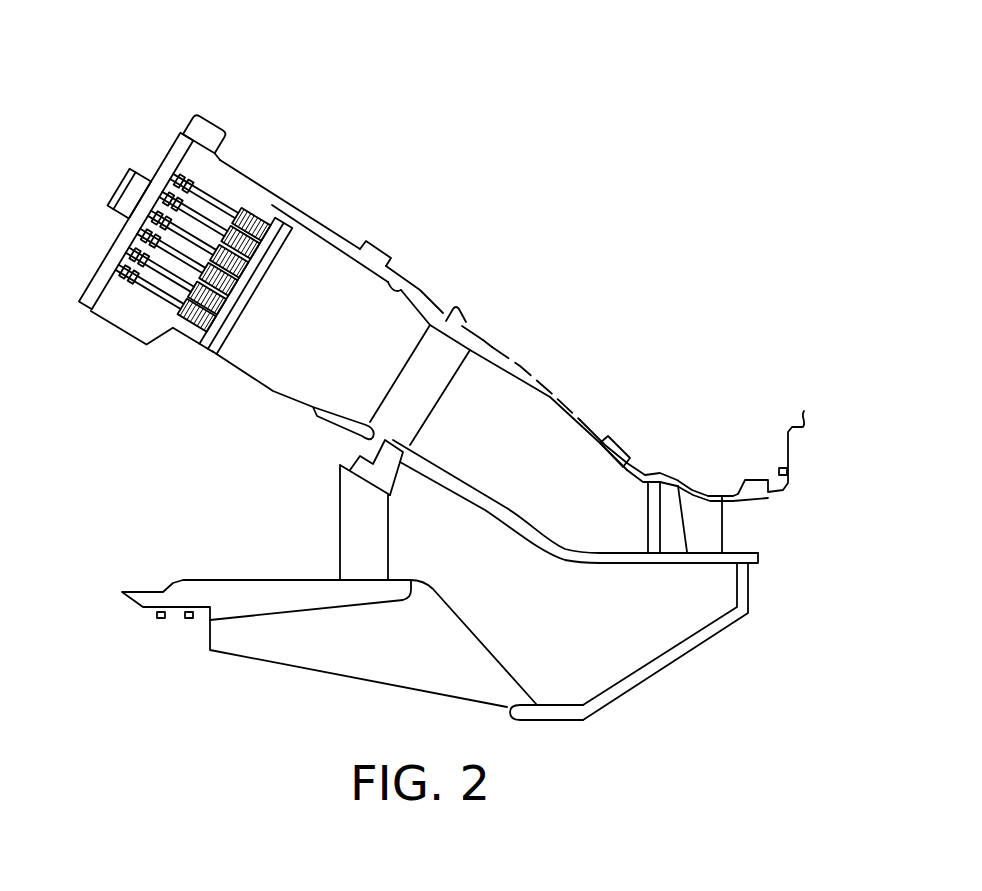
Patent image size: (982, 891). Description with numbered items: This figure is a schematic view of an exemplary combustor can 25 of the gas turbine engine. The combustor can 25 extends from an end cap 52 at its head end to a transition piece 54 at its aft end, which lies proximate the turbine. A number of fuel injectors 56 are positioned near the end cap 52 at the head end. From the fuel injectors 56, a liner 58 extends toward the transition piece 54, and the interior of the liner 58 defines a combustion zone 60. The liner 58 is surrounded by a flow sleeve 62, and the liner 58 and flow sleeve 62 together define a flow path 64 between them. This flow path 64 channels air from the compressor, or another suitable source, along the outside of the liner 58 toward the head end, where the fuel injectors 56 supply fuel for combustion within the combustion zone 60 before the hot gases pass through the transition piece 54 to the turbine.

The combustor can 25 is at (322, 148).
The end cap 52 is at (100, 272).
The transition piece 54 is at (587, 420).
The fuel injectors 56 is at (210, 250).
The liner 58 is at (393, 287).
The combustion zone 60 is at (347, 341).
The flow sleeve 62 is at (533, 365).
The flow path 64 is at (490, 340).